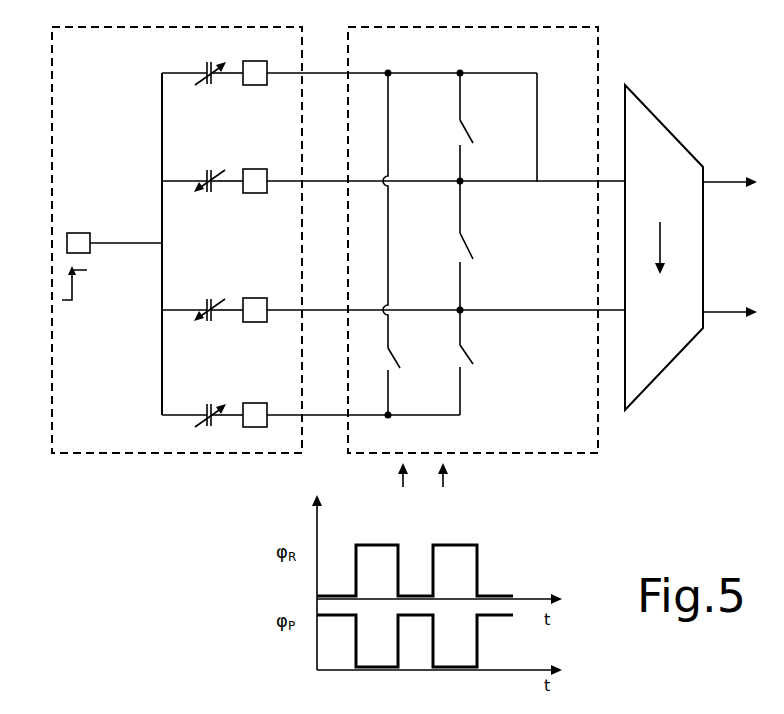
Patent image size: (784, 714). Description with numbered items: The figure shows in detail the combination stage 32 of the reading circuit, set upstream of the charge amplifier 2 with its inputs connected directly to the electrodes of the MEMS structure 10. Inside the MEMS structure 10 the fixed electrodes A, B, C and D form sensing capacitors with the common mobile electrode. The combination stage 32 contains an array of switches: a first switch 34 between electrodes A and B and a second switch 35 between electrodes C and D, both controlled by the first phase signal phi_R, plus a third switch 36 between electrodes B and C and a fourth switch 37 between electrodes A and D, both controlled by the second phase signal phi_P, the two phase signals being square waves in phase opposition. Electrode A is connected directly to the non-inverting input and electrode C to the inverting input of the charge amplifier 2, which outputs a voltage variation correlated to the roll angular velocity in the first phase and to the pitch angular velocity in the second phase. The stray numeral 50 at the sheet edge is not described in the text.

The MEMS structure 10 is at (75, 442).
The combination stage 32 is at (473, 271).
The first switch 34 is at (467, 135).
The second switch 35 is at (467, 360).
The third switch 36 is at (467, 252).
The fourth switch 37 is at (395, 360).
The charge amplifier 2 is at (663, 360).
The reference numeral 50 is at (750, 713).